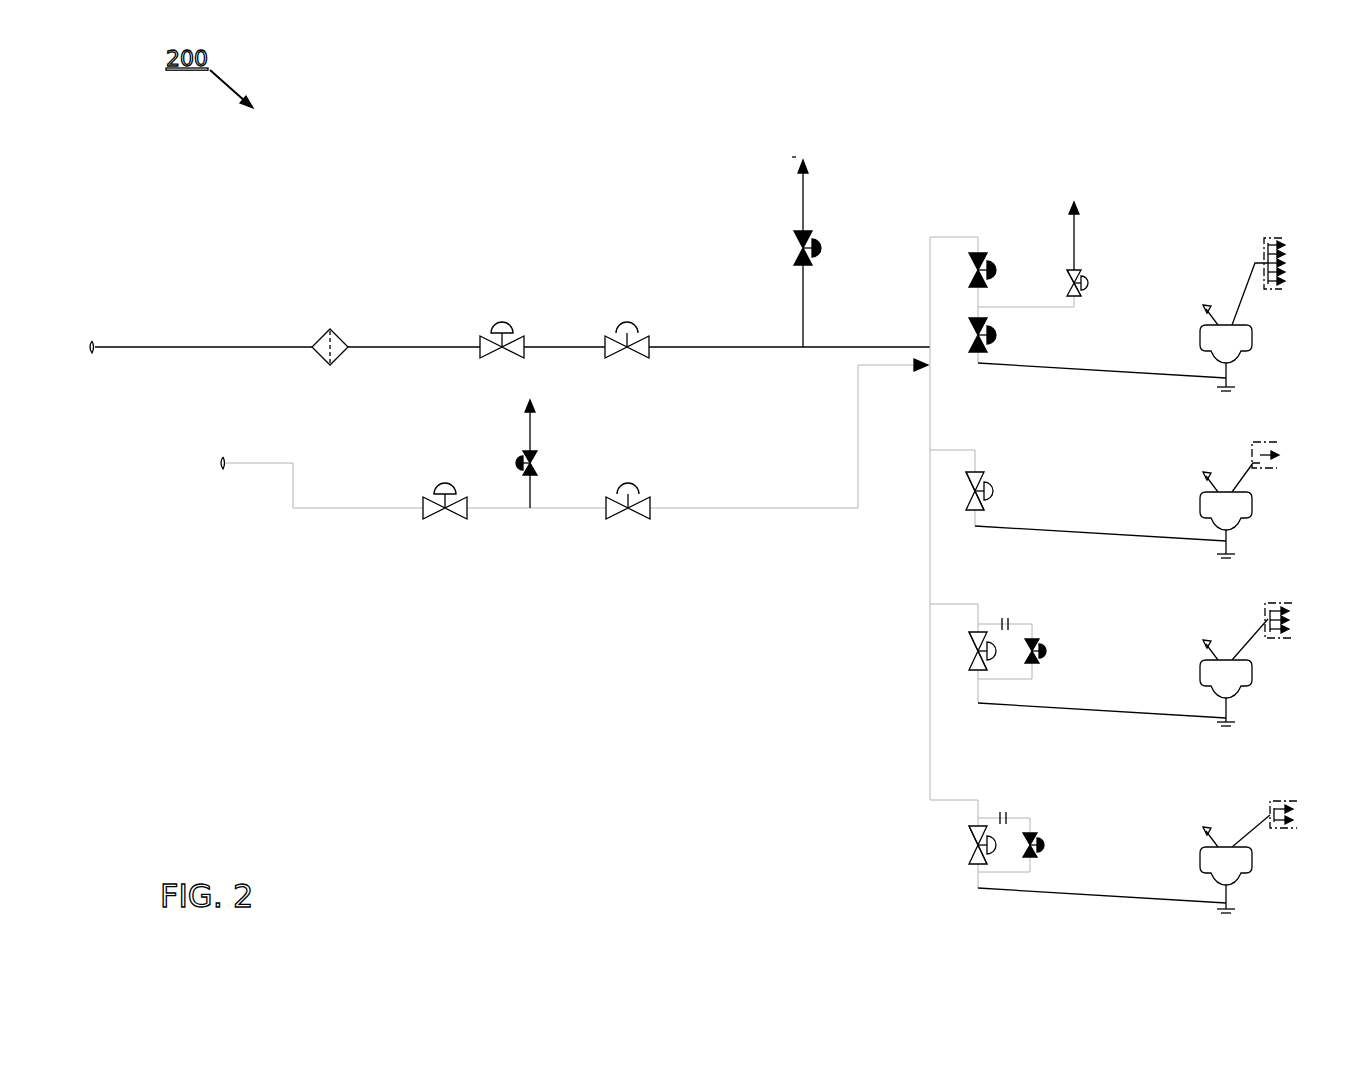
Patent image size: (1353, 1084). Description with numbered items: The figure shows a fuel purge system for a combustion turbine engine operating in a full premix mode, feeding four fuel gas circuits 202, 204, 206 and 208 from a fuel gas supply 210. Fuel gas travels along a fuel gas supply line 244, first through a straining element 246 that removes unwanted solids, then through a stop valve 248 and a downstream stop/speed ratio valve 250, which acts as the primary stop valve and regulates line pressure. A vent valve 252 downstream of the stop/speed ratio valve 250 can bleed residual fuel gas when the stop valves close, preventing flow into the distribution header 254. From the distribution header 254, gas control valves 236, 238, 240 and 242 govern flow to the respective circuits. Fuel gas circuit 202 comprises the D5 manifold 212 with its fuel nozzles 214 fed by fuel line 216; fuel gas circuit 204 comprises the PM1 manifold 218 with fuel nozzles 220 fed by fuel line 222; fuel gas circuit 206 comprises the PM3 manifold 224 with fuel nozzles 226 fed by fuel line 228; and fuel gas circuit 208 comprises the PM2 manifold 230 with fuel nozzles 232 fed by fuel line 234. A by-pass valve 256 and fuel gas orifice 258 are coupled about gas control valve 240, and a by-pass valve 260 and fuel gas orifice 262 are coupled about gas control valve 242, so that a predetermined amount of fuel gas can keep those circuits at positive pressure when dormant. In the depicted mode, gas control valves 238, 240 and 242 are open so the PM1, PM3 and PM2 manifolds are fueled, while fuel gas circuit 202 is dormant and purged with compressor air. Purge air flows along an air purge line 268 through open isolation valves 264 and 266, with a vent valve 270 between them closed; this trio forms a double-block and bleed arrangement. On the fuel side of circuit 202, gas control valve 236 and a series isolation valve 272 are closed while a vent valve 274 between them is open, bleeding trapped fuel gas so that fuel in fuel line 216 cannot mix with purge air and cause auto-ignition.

The fuel gas circuit 202 is at (1222, 300).
The fuel gas circuit 204 is at (1219, 483).
The fuel gas circuit 206 is at (1232, 649).
The fuel gas circuit 208 is at (1232, 840).
The fuel gas supply 210 is at (178, 318).
The fuel passage manifold (D5) 212 is at (1252, 349).
The fuel nozzles 214 is at (1284, 240).
The fuel line 216 is at (1068, 372).
The fuel passage manifold (PM1) 218 is at (1252, 506).
The fuel nozzles 220 is at (1268, 442).
The fuel line 222 is at (1092, 532).
The fuel passage manifold (PM3) 224 is at (1252, 676).
The fuel nozzles 226 is at (1280, 602).
The fuel line 228 is at (1085, 710).
The fuel passage manifold (PM2) 230 is at (1252, 864).
The fuel nozzles 232 is at (1280, 800).
The fuel line 234 is at (1065, 890).
The gas control valve 236 is at (998, 270).
The gas control valve 238 is at (996, 491).
The gas control valve 240 is at (972, 636).
The gas control valve 242 is at (968, 830).
The fuel gas supply line 244 is at (300, 348).
The straining element 246 is at (336, 332).
The stop valve 248 is at (500, 318).
The stop/speed ratio valve 250 is at (627, 320).
The vent valve 252 is at (820, 248).
The distribution header 254 is at (930, 278).
The by-pass valve 256 is at (1050, 651).
The fuel gas orifice 258 is at (1004, 612).
The by-pass valve 260 is at (1048, 845).
The fuel gas orifice 262 is at (1003, 806).
The isolation valve 264 is at (444, 478).
The isolation valve 266 is at (627, 487).
The air purge line 268 is at (345, 508).
The vent valve 270 is at (520, 462).
The isolation valve 272 is at (1000, 336).
The vent valve 274 is at (1092, 283).